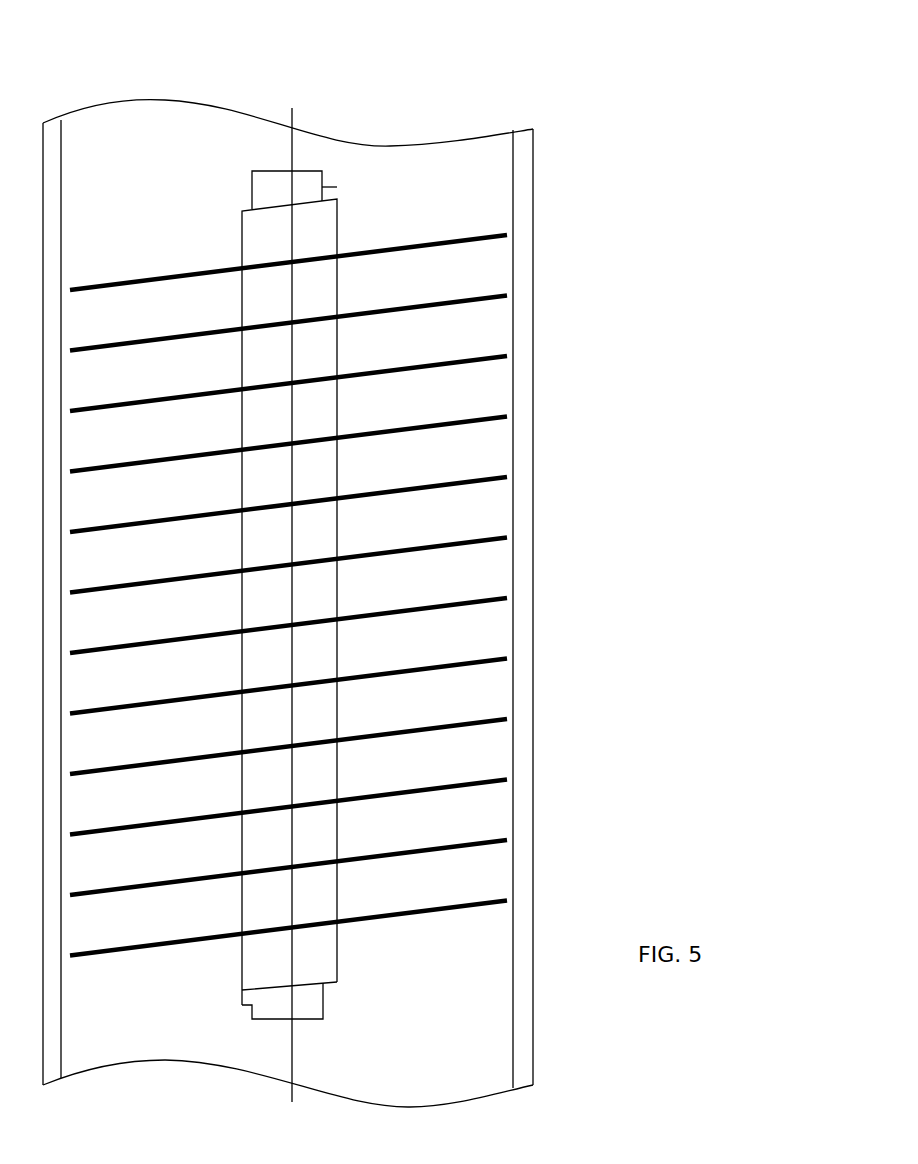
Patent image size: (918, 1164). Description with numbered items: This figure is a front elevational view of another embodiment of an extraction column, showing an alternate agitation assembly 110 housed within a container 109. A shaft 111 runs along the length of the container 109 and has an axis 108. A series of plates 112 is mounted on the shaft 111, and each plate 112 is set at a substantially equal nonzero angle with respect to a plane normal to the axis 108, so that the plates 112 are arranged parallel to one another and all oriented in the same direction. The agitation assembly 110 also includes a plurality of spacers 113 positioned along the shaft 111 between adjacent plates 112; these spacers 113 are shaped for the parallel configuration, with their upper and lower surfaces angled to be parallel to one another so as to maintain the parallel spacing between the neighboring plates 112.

The axis 108 is at (292, 108).
The container 109 is at (510, 387).
The agitation assembly 110 is at (633, 120).
The shaft 111 is at (312, 185).
The plate 112 is at (505, 289).
The spacer 113 is at (312, 225).